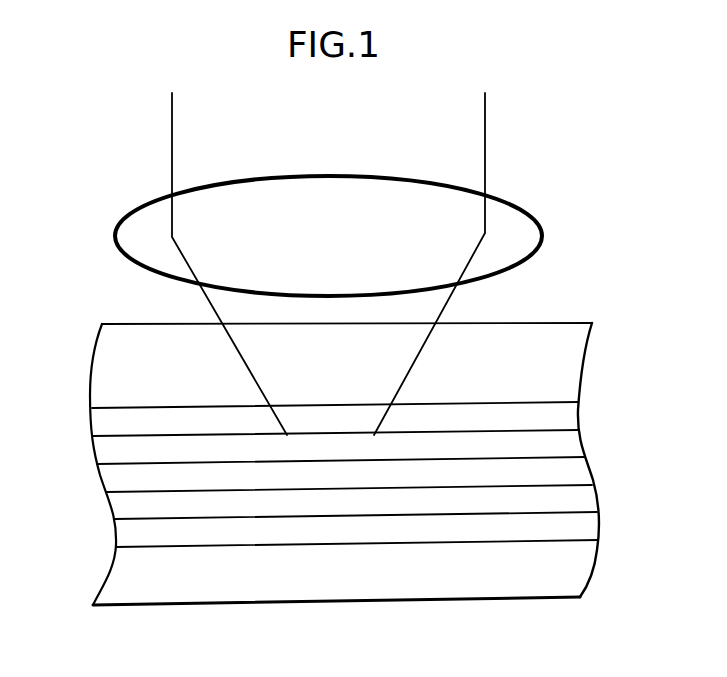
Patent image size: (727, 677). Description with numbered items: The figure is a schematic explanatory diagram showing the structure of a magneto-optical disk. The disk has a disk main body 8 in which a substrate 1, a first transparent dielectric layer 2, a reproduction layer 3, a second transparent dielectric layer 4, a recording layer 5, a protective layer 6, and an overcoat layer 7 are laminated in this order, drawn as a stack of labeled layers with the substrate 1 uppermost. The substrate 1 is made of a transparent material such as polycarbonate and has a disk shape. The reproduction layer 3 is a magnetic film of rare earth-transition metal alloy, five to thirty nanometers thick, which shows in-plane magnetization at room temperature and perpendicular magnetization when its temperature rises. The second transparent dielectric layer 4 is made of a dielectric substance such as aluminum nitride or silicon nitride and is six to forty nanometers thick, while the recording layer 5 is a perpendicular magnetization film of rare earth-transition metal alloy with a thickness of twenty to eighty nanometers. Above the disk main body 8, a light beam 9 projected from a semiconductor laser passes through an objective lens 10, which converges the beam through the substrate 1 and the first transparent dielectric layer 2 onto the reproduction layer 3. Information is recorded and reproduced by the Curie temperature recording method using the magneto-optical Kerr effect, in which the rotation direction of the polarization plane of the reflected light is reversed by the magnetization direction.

The substrate 1 is at (568, 372).
The first transparent dielectric layer 2 is at (573, 422).
The reproduction layer 3 is at (575, 450).
The second transparent dielectric layer 4 is at (578, 475).
The recording layer 5 is at (588, 500).
The protective layer 6 is at (590, 528).
The overcoat layer 7 is at (583, 573).
The disk main body 8 is at (80, 325).
The light beam 9 is at (485, 140).
The objective lens 10 is at (542, 232).